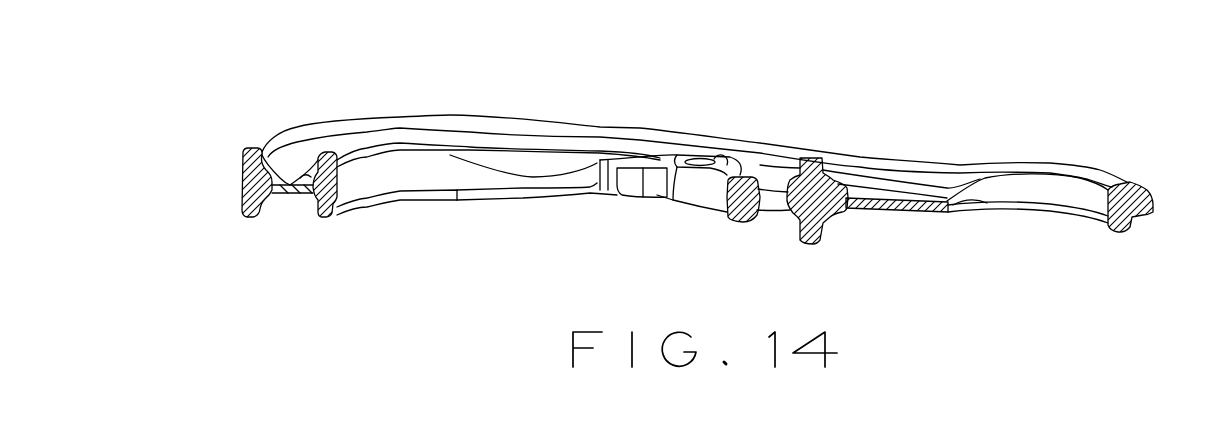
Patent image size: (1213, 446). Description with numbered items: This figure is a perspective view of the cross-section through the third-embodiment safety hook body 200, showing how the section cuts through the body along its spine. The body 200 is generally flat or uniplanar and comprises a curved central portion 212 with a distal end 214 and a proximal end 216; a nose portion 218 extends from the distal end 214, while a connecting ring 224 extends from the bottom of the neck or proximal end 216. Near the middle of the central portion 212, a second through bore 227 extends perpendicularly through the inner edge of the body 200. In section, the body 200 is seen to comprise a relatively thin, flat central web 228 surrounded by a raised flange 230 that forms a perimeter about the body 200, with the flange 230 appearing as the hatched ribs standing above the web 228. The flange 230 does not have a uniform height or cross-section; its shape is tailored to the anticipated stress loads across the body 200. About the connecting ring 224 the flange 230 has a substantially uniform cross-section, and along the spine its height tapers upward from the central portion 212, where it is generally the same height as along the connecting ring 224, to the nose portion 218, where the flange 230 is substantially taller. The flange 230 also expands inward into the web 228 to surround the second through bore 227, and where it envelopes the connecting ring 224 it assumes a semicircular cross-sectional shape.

The safety hook body 200 is at (955, 121).
The central portion 212 is at (593, 214).
The distal end 214 is at (428, 137).
The proximal end 216 is at (915, 151).
The nose portion 218 is at (232, 151).
The connecting ring 224 is at (1050, 192).
The second through bore 227 is at (705, 156).
The central web 228 is at (287, 194).
The flange 230 is at (250, 183).